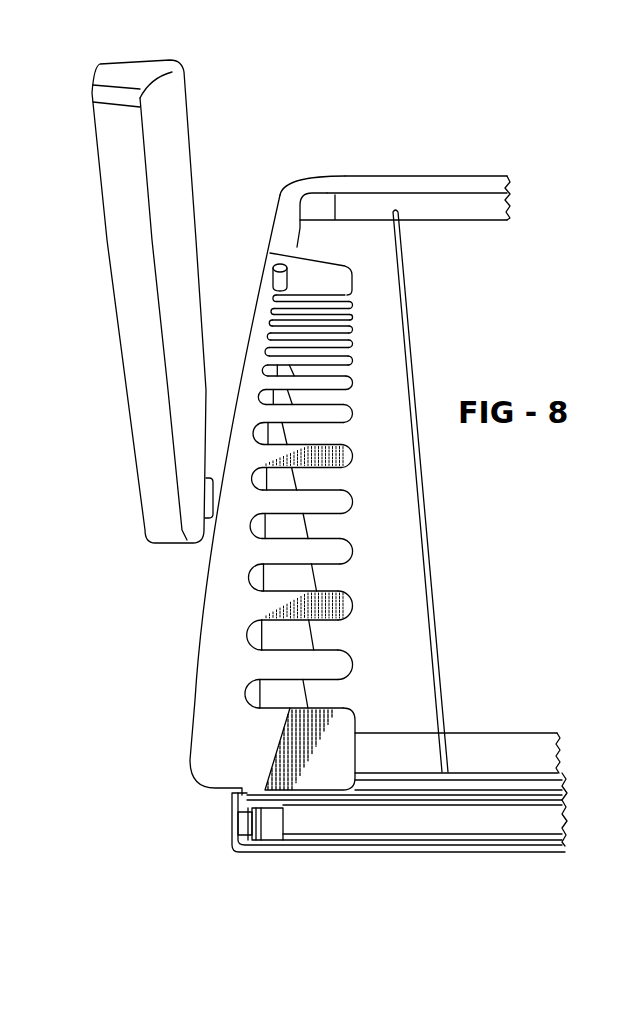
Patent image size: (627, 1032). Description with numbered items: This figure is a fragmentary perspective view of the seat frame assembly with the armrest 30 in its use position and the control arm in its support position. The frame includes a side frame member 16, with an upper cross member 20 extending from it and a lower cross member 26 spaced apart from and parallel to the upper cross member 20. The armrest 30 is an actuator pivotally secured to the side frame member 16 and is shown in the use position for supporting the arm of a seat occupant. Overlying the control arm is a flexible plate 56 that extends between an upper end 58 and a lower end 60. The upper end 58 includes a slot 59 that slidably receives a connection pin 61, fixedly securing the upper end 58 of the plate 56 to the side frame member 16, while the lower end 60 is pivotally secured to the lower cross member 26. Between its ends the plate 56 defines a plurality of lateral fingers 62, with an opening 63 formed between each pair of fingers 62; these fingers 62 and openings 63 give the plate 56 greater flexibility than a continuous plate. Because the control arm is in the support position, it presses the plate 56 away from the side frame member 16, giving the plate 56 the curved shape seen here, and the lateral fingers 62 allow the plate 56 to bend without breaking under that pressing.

The side frame member 16 is at (268, 247).
The upper cross member 20 is at (435, 217).
The lower cross member 26 is at (495, 770).
The armrest 30 is at (180, 122).
The plate 56 is at (213, 610).
The upper end 58 is at (305, 188).
The slot 59 is at (272, 283).
The lower end 60 is at (232, 800).
The connection pin 61 is at (273, 265).
The lateral fingers 62 is at (342, 448).
The opening 63 is at (313, 697).